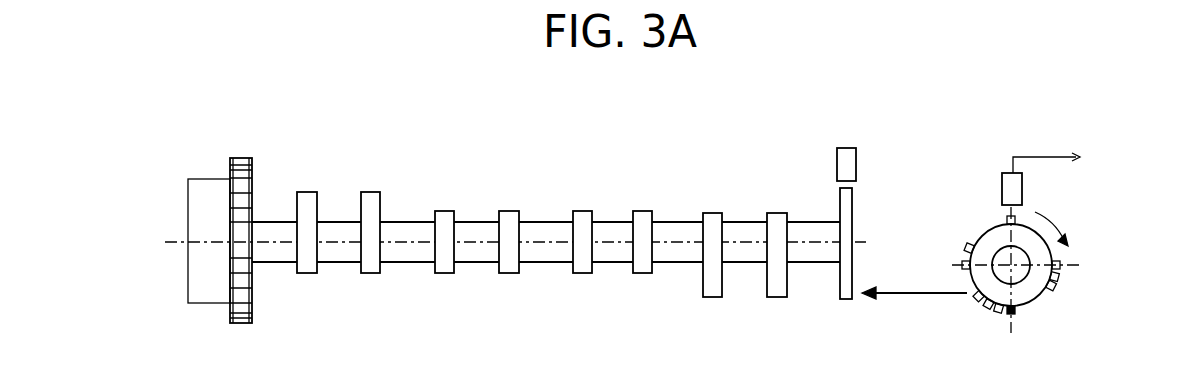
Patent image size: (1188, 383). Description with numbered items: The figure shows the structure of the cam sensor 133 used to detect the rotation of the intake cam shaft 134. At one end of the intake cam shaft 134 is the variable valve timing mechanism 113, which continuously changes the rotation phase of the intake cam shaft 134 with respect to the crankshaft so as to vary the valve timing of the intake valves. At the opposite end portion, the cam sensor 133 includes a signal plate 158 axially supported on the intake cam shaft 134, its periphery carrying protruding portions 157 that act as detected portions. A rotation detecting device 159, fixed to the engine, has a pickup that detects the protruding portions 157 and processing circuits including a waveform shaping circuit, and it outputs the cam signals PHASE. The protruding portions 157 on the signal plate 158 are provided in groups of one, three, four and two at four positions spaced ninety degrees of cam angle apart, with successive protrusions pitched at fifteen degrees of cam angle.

The variable valve timing mechanism 113 is at (207, 293).
The intake cam shaft 134 is at (540, 222).
The signal plate 158 is at (850, 278).
The rotation detecting device 159 is at (847, 147).
The protruding portions 157 is at (1052, 290).
The cam sensor 133 is at (1050, 131).